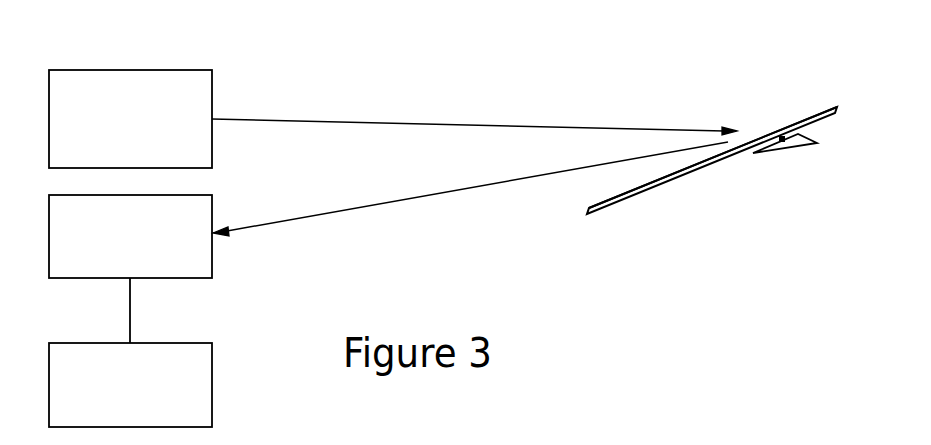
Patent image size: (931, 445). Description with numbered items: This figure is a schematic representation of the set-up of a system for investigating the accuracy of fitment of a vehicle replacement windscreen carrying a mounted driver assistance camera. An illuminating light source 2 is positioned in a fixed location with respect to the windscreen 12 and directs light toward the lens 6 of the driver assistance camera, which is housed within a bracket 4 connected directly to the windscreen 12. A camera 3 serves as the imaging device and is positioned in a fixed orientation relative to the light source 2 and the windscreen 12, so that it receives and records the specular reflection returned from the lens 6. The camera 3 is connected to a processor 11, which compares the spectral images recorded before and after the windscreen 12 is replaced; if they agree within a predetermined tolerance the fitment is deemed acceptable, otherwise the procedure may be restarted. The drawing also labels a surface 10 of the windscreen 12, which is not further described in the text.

The illuminating light source 2 is at (140, 130).
The camera 3 is at (140, 248).
The processor 11 is at (111, 396).
The windscreen 12 is at (677, 178).
The surface of substrate 10 is at (806, 119).
The camera lens 6 is at (780, 136).
The bracket 4 is at (795, 147).